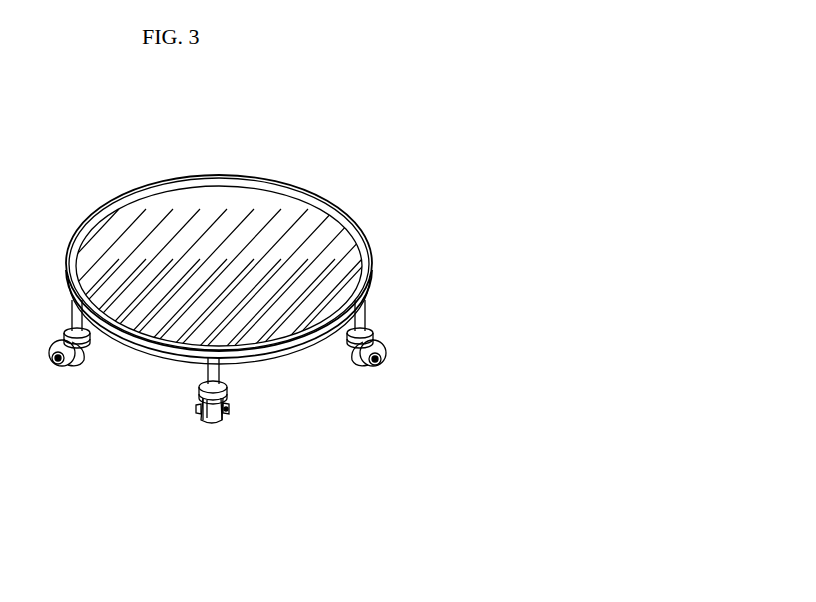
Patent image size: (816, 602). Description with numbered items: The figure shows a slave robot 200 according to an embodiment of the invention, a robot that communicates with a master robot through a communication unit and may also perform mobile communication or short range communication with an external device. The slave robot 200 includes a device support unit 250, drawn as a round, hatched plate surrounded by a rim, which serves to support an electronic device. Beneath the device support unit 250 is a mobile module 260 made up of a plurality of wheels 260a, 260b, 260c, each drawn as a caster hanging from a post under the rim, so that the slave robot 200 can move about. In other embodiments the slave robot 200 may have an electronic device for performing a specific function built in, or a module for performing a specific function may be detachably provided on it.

The slave robot 200 is at (313, 156).
The device support unit 250 is at (114, 235).
The mobile module 260 is at (377, 490).
The wheel 260a is at (66, 366).
The wheel 260b is at (211, 426).
The wheel 260c is at (380, 366).